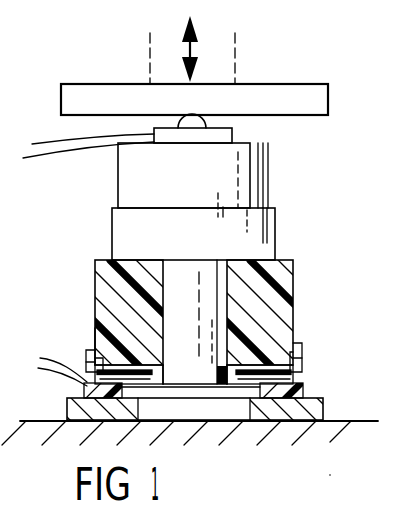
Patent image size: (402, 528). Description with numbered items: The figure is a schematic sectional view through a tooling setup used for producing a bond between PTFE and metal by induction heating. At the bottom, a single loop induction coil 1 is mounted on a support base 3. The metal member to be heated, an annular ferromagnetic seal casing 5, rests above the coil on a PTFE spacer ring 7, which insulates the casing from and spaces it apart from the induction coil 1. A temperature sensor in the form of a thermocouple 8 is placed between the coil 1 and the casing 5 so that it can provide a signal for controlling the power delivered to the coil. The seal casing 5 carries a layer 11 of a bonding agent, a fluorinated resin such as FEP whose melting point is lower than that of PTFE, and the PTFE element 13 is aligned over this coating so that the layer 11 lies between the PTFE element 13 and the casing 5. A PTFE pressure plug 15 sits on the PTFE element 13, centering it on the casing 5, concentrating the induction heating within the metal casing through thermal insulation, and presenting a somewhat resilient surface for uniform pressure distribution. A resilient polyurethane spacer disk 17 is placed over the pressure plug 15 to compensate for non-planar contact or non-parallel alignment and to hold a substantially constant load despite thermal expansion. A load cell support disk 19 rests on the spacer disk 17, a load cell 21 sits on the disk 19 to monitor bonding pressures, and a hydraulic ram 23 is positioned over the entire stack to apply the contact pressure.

The single loop induction coil 1 is at (320, 407).
The support base 3 is at (333, 431).
The annular ferromagnetic seal casing 5 is at (90, 362).
The PTFE spacer ring 7 is at (303, 386).
The thermocouple 8 is at (83, 388).
The layer of bonding agent 11 is at (295, 352).
The PTFE element 13 is at (97, 328).
The PTFE pressure plug 15 is at (284, 272).
The resilient polyurethane spacer disk 17 is at (268, 238).
The load cell support disk 19 is at (135, 178).
The load cell 21 is at (232, 136).
The hydraulic ram 23 is at (128, 95).